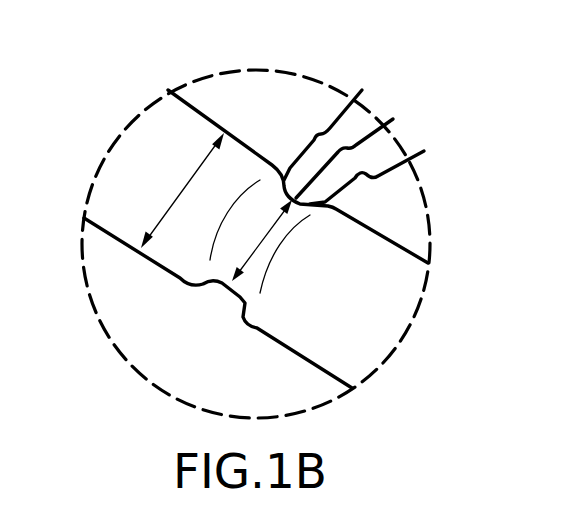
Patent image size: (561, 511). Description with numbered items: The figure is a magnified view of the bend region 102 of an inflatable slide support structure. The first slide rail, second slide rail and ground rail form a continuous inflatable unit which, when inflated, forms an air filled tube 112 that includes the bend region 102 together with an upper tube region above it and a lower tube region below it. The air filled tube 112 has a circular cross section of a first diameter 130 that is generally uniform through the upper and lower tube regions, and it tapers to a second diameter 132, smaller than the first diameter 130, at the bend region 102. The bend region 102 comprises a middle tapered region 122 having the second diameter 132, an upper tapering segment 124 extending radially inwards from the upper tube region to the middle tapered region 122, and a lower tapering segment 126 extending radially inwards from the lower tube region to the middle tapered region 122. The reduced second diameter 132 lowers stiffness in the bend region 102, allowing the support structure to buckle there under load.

The bend region 102 is at (193, 82).
The air filled tube 112 is at (212, 138).
The upper tapering segment 124 is at (331, 118).
The middle tapered region 122 is at (356, 144).
The lower tapering segment 126 is at (385, 169).
The first diameter 130 is at (182, 190).
The second diameter 132 is at (258, 245).